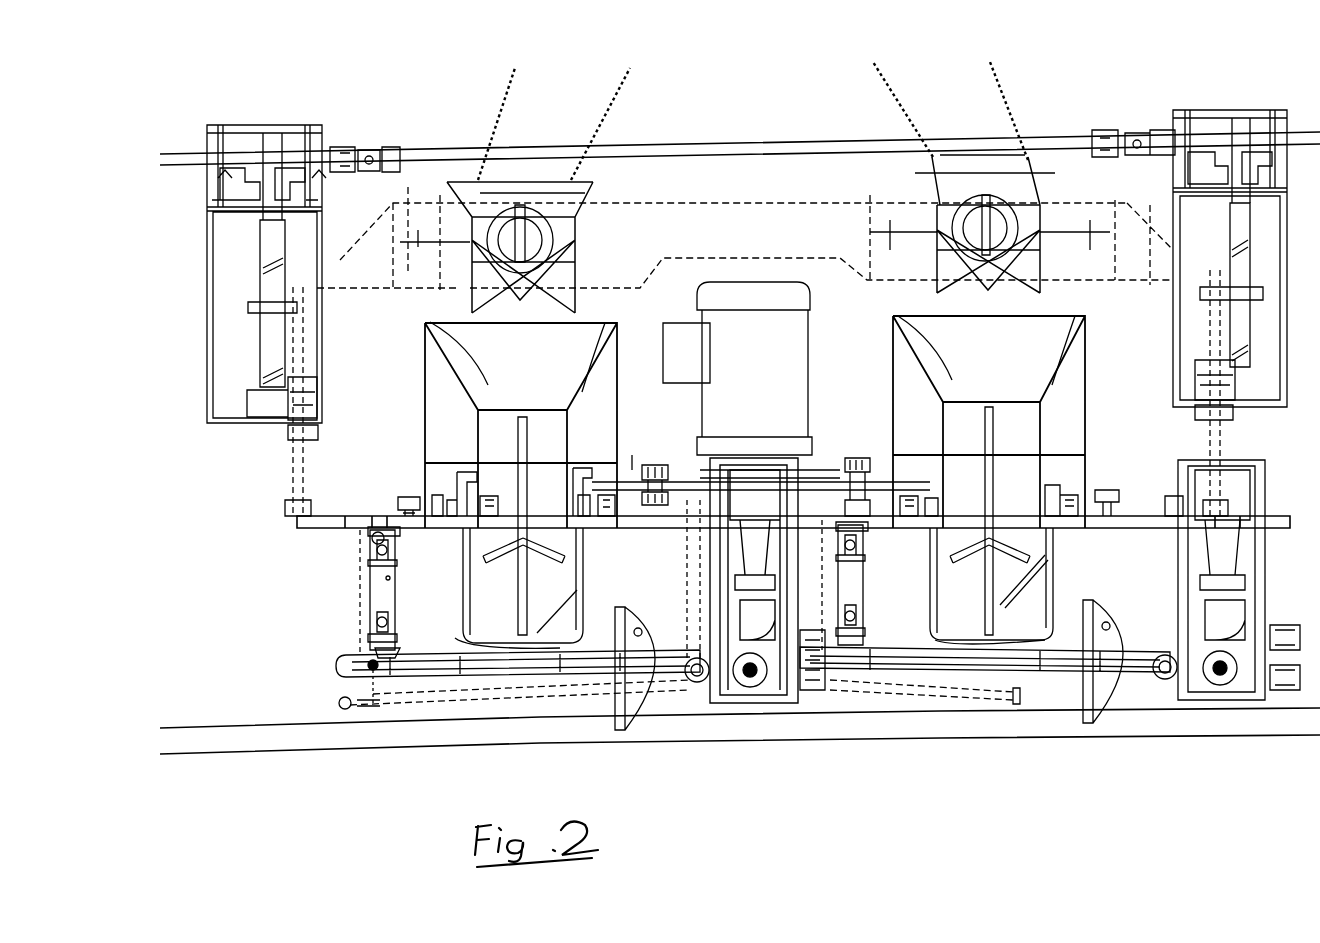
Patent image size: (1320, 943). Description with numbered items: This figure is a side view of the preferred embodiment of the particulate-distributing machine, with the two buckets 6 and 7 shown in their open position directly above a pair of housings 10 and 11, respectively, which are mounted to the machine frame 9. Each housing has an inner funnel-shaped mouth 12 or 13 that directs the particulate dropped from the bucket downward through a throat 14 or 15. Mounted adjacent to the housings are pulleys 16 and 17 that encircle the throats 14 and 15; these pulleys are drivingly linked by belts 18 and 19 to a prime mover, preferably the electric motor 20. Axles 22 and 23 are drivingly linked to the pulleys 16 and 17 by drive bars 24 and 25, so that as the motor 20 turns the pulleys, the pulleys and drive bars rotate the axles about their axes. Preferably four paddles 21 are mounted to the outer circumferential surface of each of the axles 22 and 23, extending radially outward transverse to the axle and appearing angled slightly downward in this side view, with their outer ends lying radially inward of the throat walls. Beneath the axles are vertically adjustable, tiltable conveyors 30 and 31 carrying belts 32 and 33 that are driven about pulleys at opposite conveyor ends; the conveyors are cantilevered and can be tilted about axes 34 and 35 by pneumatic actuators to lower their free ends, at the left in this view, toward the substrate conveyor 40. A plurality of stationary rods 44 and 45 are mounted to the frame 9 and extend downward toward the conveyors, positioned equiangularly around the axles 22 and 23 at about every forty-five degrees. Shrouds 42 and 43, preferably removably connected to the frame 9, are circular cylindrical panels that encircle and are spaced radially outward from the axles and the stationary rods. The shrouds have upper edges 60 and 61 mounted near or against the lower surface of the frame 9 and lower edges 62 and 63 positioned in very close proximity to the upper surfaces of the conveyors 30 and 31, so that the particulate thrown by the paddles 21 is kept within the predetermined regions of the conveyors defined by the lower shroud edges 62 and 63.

The bucket 6 is at (1053, 149).
The bucket 7 is at (459, 163).
The machine frame 9 is at (333, 525).
The housing 10 is at (1088, 396).
The housing 11 is at (425, 373).
The funnel-shaped mouth 12 is at (1055, 385).
The funnel-shaped mouth 13 is at (585, 388).
The throat 14 is at (945, 435).
The throat 15 is at (478, 440).
The pulley 16 is at (1052, 492).
The pulley 17 is at (470, 482).
The belt 18 is at (824, 466).
The belt 19 is at (632, 482).
The electric motor 20 is at (785, 390).
The paddles 21 is at (510, 560).
The axle 22 is at (995, 430).
The axle 23 is at (530, 428).
The drive bar 24 is at (1010, 592).
The drive bar 25 is at (545, 602).
The conveyor 30 is at (897, 691).
The conveyor 31 is at (410, 694).
The belt 32 is at (1078, 600).
The belt 33 is at (598, 655).
The axis 34 is at (1168, 680).
The axis 35 is at (697, 685).
The substrate conveyor 40 is at (258, 726).
The shroud 42 is at (864, 595).
The shroud 43 is at (396, 598).
The stationary rods 44 is at (1045, 620).
The stationary rods 45 is at (458, 641).
The upper edge 60 is at (862, 522).
The upper edge 61 is at (396, 535).
The lower edge 62 is at (860, 645).
The lower edge 63 is at (410, 648).